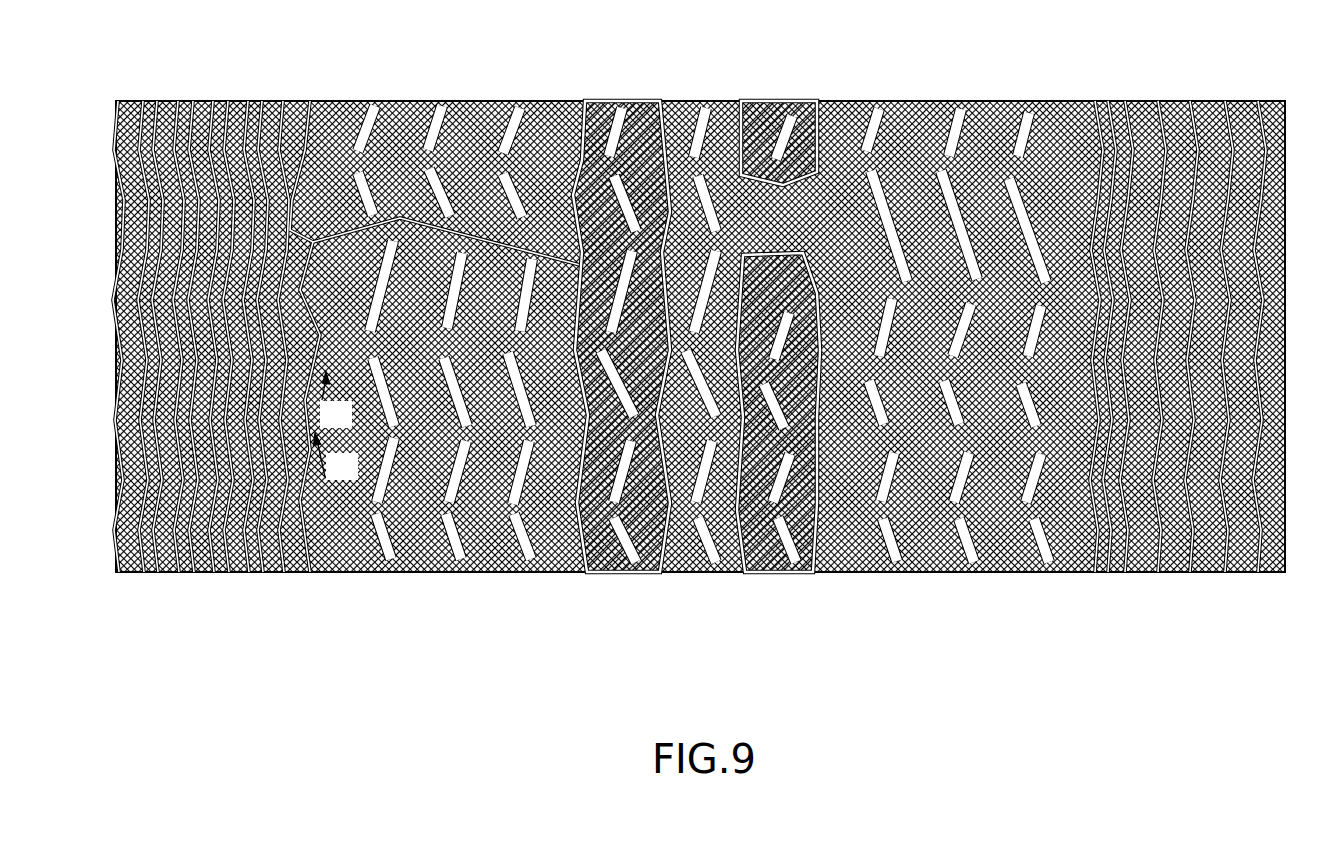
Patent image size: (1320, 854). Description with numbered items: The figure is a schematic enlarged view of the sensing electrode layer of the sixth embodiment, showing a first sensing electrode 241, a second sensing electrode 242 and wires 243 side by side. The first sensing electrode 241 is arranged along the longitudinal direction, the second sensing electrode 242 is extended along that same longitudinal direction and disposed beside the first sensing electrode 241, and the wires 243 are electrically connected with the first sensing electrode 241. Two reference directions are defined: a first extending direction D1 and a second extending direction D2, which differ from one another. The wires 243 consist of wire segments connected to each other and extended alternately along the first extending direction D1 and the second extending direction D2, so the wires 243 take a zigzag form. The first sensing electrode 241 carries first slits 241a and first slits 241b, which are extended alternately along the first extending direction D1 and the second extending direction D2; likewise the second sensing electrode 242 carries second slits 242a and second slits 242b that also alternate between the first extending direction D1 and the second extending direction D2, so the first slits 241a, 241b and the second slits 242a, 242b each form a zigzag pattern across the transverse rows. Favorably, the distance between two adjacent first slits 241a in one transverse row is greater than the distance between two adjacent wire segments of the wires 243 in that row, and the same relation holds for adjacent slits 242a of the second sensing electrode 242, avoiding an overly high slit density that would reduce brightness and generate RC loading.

The first sensing electrode 241 is at (698, 344).
The first slits 241a is at (523, 470).
The first slits 241b is at (540, 540).
The second sensing electrode 242 is at (696, 337).
The second slits 242a is at (662, 573).
The second slits 242b is at (778, 573).
The wires 243 is at (233, 594).
The first extending direction D1 is at (336, 456).
The second extending direction D2 is at (336, 400).